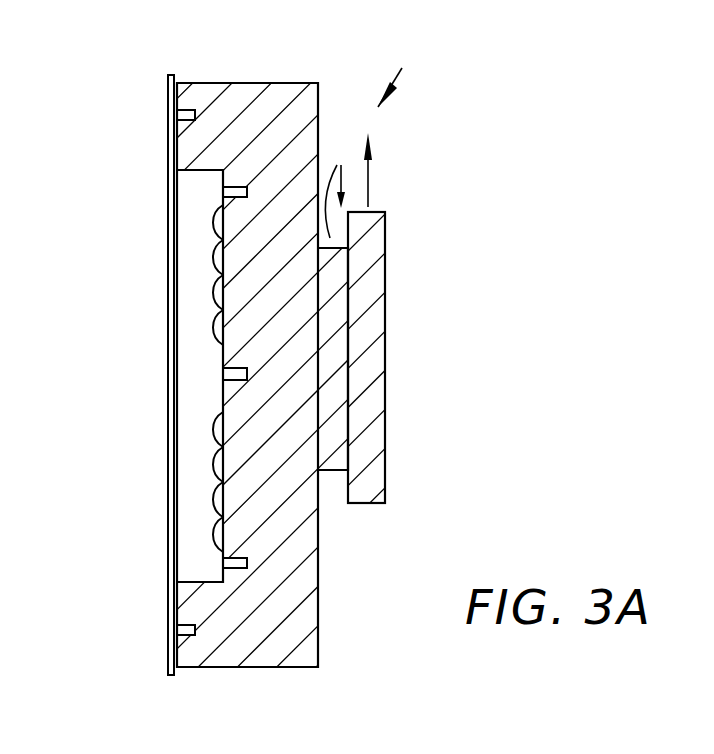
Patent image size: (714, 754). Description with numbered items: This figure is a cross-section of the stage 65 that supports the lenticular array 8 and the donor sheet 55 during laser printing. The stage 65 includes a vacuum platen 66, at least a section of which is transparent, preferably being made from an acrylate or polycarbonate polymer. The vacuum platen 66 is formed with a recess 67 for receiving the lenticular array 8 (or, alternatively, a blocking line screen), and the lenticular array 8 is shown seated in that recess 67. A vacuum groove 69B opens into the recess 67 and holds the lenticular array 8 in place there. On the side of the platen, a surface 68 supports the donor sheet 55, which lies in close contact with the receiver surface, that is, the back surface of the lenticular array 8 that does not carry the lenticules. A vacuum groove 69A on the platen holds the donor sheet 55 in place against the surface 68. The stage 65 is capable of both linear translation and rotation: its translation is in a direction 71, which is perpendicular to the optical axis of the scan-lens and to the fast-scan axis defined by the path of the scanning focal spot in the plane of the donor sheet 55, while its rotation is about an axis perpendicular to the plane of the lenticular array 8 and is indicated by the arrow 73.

The donor sheet 55 is at (170, 213).
The lenticular array 8 is at (200, 268).
The vacuum platen 66 is at (205, 108).
The recess 67 is at (220, 377).
The surface 68 is at (172, 135).
The vacuum groove 69A is at (186, 108).
The vacuum groove 69B is at (245, 185).
The direction 71 is at (370, 178).
The arrow 73 is at (337, 165).
The stage 65 is at (402, 68).